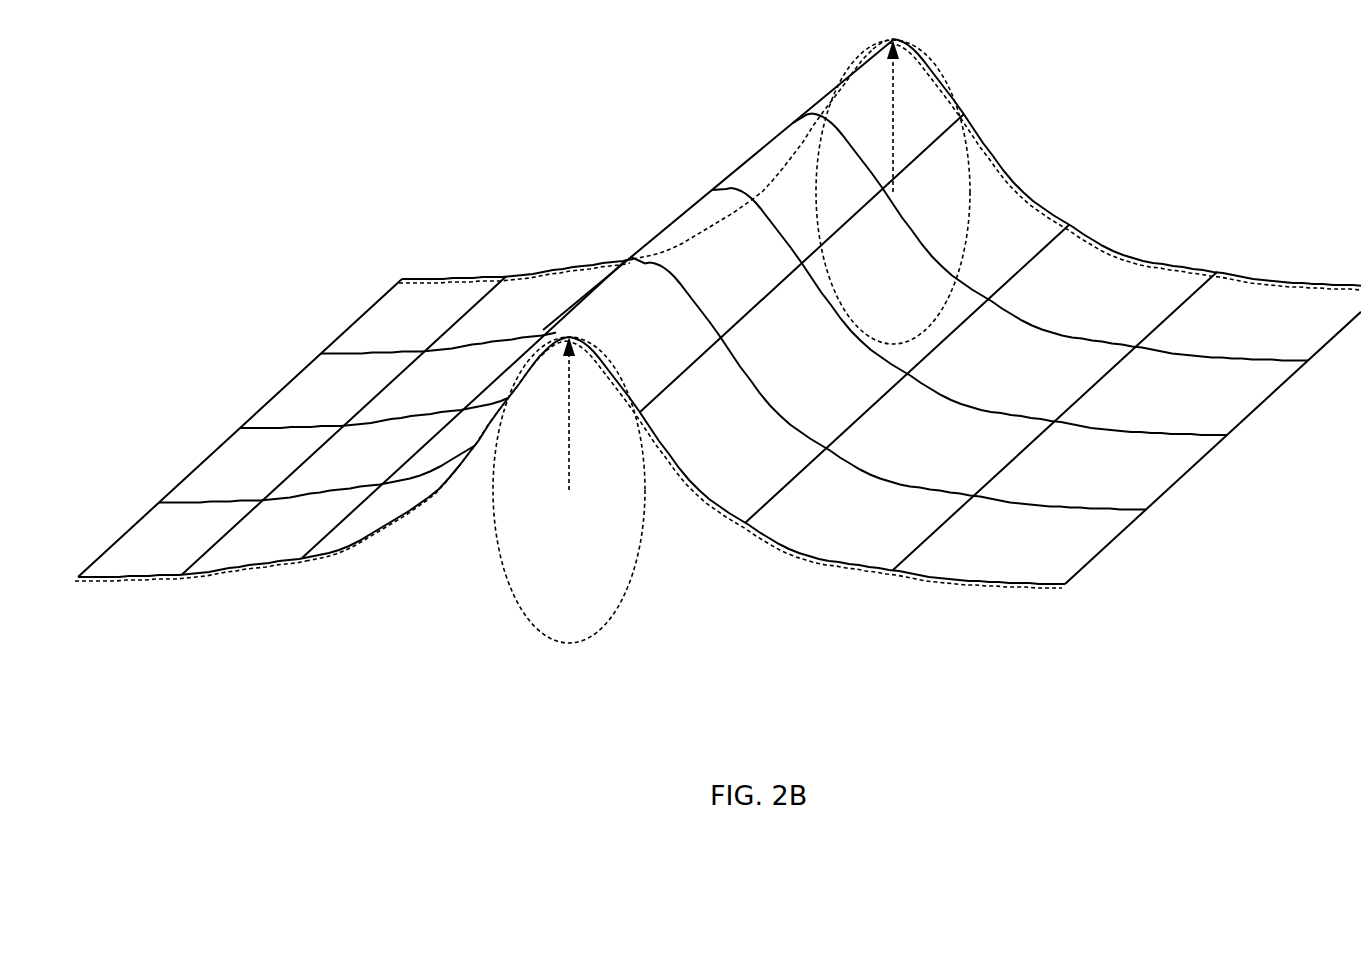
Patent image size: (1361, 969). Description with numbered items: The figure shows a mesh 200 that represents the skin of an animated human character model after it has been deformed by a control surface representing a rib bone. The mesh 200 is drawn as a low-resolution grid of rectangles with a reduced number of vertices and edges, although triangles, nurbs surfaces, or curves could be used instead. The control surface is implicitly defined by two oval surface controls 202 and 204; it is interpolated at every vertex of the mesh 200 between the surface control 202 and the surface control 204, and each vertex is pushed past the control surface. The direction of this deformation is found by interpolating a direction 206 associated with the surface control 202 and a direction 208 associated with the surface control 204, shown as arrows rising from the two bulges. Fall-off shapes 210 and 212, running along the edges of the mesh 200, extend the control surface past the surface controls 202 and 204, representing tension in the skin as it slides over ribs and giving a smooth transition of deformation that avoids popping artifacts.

The mesh 200 is at (1189, 470).
The surface control 202 is at (616, 617).
The surface control 204 is at (972, 193).
The direction 206 is at (569, 490).
The direction 208 is at (893, 192).
The fall-off shape 210 is at (800, 553).
The fall-off shape 212 is at (1127, 253).